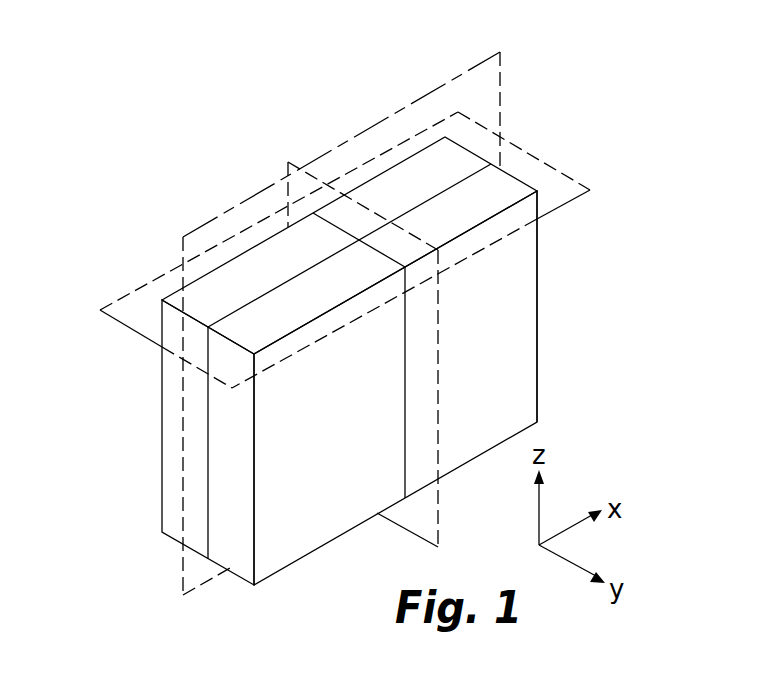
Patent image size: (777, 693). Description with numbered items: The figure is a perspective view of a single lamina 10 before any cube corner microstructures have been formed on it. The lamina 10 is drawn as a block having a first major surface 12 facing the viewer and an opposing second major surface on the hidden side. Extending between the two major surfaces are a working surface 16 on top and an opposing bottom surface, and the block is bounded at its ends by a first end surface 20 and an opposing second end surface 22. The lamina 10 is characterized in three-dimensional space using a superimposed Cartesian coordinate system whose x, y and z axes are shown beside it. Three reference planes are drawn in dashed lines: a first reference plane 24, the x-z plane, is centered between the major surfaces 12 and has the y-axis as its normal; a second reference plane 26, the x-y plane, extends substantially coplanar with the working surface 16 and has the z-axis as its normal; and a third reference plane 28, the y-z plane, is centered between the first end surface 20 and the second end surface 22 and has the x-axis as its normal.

The lamina 10 is at (246, 138).
The first major surface 12 is at (334, 432).
The working surface 16 is at (500, 195).
The first end surface 20 is at (172, 425).
The second end surface 22 is at (537, 322).
The first reference plane 24 is at (500, 84).
The second reference plane 26 is at (565, 203).
The third reference plane 28 is at (440, 514).